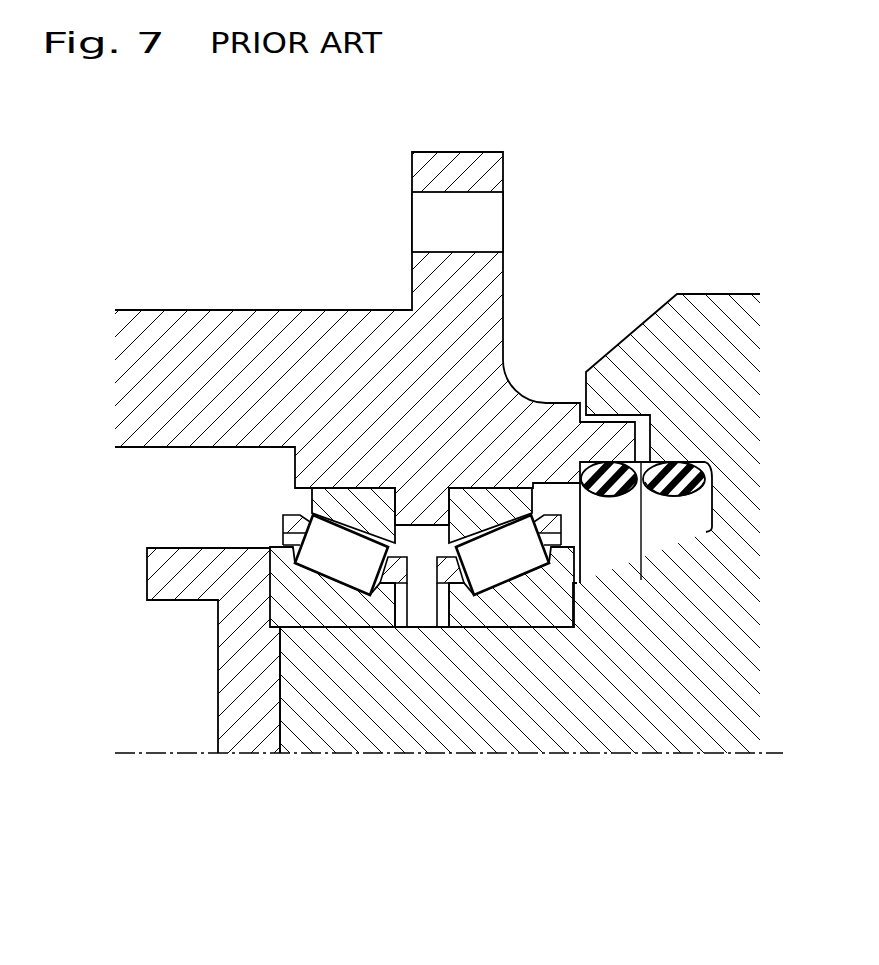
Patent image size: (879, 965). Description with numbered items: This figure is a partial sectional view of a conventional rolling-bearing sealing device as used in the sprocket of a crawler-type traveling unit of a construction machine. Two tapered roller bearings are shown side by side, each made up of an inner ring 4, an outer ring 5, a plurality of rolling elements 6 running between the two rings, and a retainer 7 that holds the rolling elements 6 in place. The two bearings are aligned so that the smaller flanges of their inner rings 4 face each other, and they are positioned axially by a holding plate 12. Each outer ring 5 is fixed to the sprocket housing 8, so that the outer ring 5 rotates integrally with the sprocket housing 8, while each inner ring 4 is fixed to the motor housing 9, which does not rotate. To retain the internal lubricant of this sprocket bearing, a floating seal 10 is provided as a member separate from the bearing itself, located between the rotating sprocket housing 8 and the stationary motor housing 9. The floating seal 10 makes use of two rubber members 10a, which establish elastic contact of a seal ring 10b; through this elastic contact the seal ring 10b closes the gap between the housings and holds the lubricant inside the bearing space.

The inner ring 4 is at (340, 610).
The outer ring 5 is at (352, 500).
The rolling elements 6 is at (360, 573).
The retainer 7 is at (400, 567).
The sprocket housing 8 is at (247, 403).
The motor housing 9 is at (558, 672).
The floating seal 10 is at (664, 669).
The rubber members 10a is at (607, 497).
The seal ring 10b is at (633, 495).
The holding plate 12 is at (252, 658).